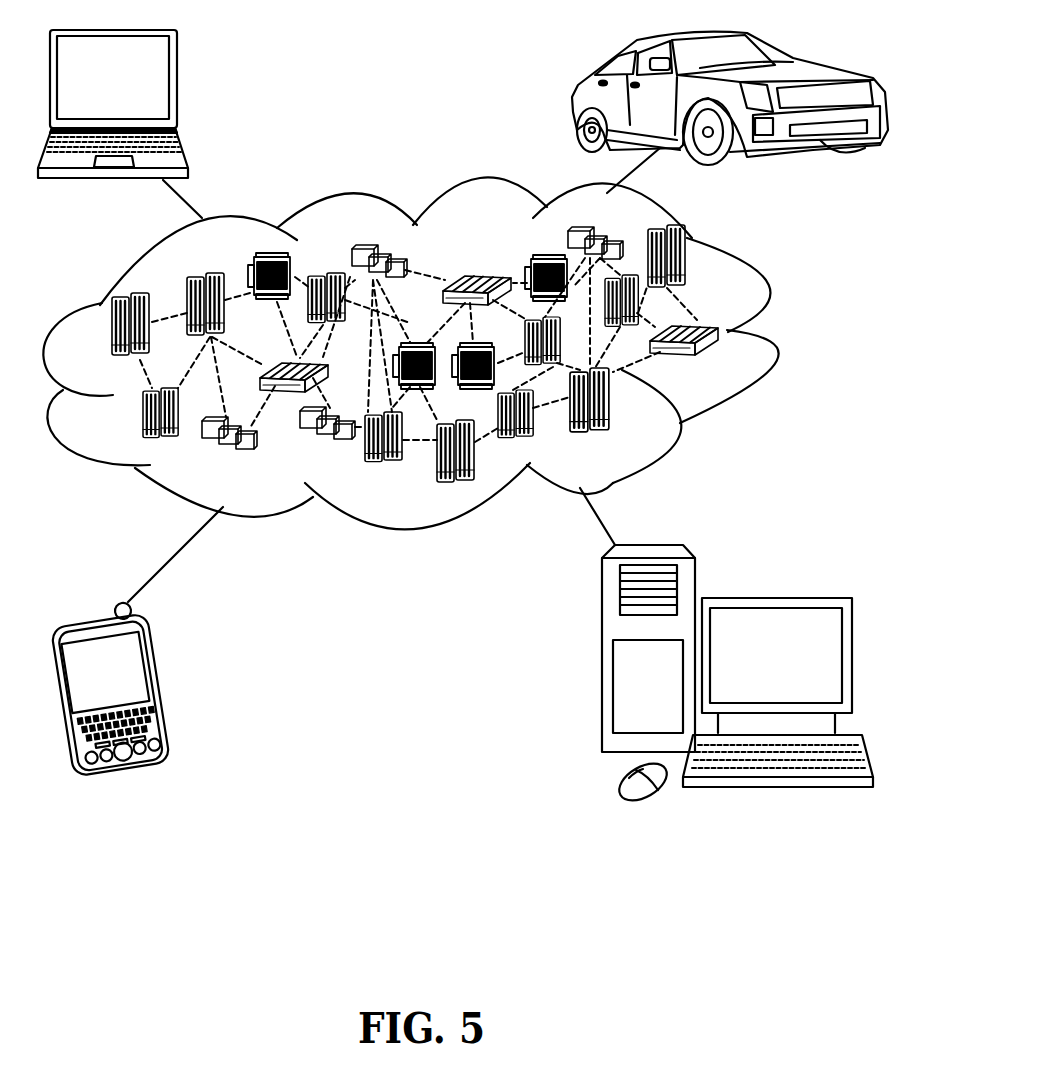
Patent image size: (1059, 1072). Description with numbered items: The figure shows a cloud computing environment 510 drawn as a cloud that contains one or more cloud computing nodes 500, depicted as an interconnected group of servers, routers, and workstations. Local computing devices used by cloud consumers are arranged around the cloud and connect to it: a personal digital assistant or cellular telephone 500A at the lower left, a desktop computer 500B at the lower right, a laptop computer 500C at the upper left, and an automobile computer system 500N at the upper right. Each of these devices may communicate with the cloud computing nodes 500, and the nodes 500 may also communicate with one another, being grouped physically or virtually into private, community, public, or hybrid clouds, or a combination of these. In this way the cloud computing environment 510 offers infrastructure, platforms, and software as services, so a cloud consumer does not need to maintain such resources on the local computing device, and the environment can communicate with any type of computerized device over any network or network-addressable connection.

The cloud computing nodes 500 is at (440, 375).
The cloud computing environment 510 is at (776, 333).
The personal digital assistant (PDA) or cellular telephone 500A is at (164, 678).
The desktop computer 500B is at (773, 597).
The laptop computer 500C is at (177, 83).
The automobile computer system 500N is at (575, 95).